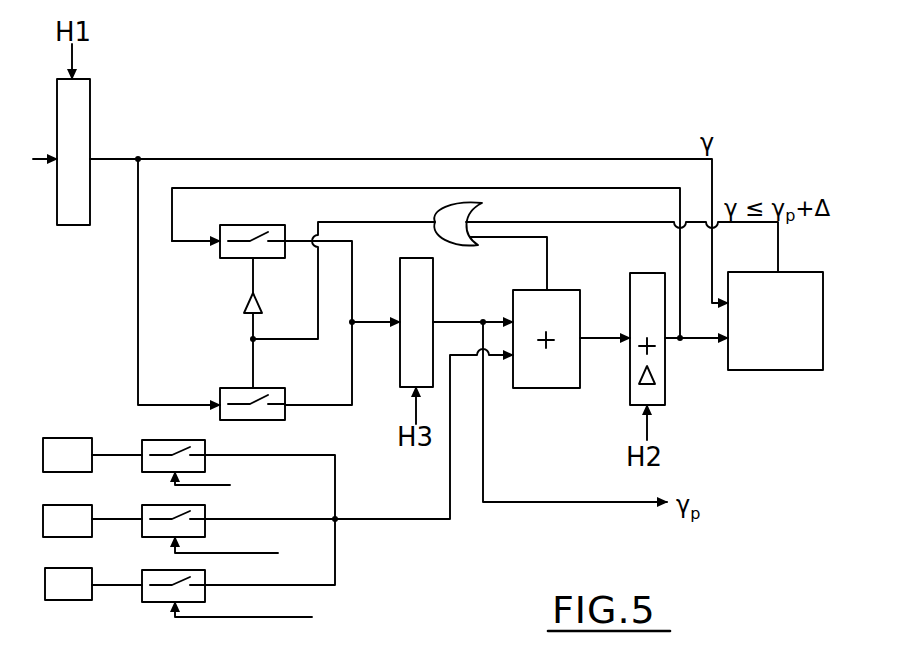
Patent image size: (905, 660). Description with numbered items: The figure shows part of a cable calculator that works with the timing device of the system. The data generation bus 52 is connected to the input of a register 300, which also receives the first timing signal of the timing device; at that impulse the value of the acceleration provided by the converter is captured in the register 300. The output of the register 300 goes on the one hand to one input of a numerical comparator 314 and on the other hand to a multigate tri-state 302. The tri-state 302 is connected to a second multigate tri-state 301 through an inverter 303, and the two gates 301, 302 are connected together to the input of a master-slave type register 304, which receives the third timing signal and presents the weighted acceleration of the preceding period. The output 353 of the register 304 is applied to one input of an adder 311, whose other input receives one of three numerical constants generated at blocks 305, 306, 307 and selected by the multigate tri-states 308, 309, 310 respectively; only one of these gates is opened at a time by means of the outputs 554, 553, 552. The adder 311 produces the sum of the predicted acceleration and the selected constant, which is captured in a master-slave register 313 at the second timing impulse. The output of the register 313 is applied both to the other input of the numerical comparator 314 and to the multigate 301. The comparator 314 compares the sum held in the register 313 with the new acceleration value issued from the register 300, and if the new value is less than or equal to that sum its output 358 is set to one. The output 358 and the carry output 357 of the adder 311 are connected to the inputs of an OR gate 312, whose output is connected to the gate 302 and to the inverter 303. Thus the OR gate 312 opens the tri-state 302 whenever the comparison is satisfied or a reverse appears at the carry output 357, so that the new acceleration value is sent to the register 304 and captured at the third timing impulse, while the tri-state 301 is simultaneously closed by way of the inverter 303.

The data generation bus 52 is at (35, 163).
The register 300 is at (88, 108).
The multigate tri-state 301 is at (238, 260).
The multigate tri-state 302 is at (232, 388).
The inverter 303 is at (246, 303).
The master-slave type register 304 is at (406, 282).
The numerical constant generator 305 is at (75, 440).
The numerical constant generator 306 is at (70, 505).
The numerical constant generator 307 is at (80, 600).
The multigate tri-state 308 is at (175, 441).
The multigate tri-state 309 is at (170, 507).
The multigate tri-state 310 is at (150, 572).
The adder 311 is at (535, 388).
The OR gate 312 is at (438, 219).
The master-slave register 313 is at (652, 282).
The numerical comparator 314 is at (782, 371).
The output of the register 304 353 is at (454, 325).
The carry output of the adder 357 is at (547, 250).
The output of the numerical comparator 358 is at (778, 252).
The output 552 is at (283, 618).
The output 553 is at (249, 553).
The output 554 is at (231, 486).